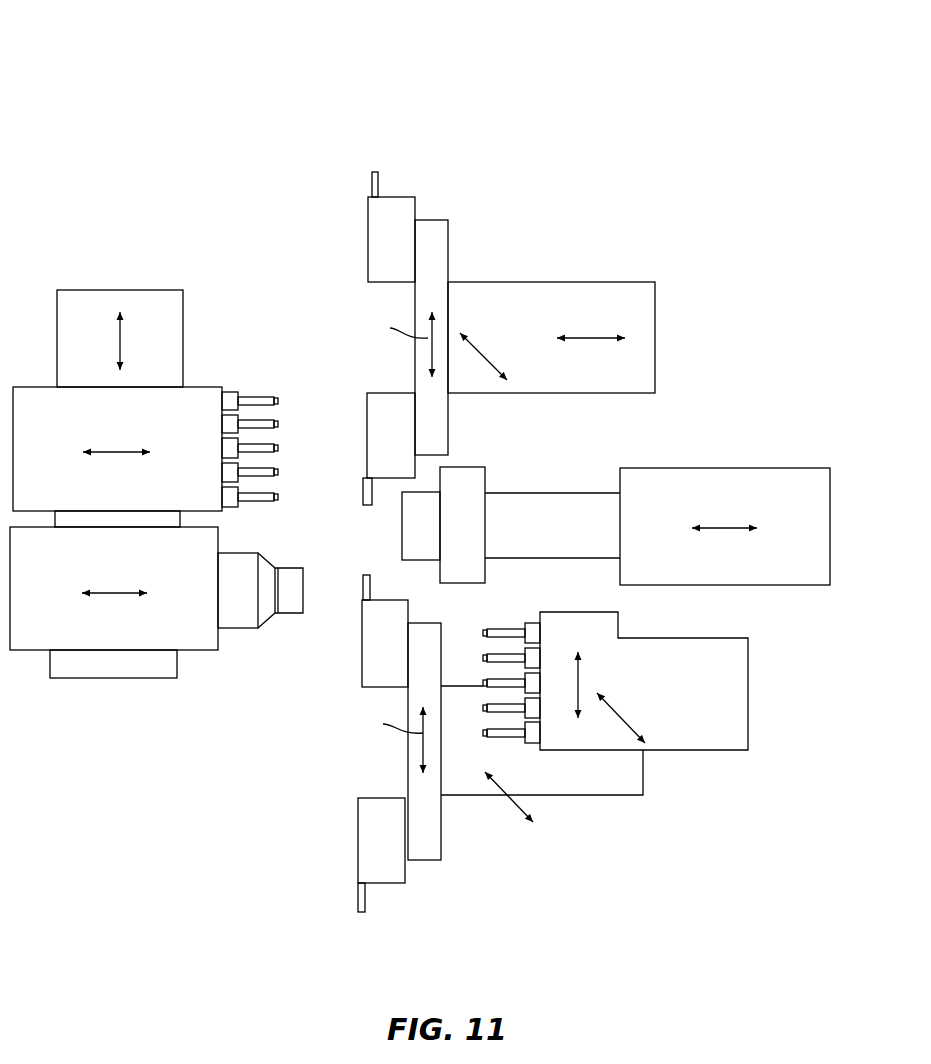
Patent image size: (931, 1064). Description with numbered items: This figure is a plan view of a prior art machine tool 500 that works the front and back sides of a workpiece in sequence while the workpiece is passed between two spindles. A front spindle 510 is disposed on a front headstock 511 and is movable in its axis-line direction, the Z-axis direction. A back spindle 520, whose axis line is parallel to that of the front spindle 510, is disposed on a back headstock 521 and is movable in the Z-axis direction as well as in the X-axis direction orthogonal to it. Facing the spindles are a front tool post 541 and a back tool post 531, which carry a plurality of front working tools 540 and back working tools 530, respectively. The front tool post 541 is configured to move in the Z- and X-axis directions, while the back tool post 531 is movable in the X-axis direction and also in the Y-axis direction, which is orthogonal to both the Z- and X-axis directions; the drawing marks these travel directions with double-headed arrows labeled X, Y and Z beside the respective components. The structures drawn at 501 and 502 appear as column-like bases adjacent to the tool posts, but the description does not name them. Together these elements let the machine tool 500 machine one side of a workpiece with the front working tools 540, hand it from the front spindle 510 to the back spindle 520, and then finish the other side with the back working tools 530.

The machine tool 500 is at (117, 80).
The first column 501 is at (433, 228).
The second column 502 is at (428, 835).
The front spindle 510 is at (412, 524).
The front headstock 511 is at (772, 480).
The back spindle 520 is at (293, 600).
The back headstock 521 is at (108, 640).
The back working tools 530 is at (505, 630).
The back tool post 531 is at (700, 733).
The front working tools 540 is at (255, 402).
The front tool post 541 is at (38, 393).